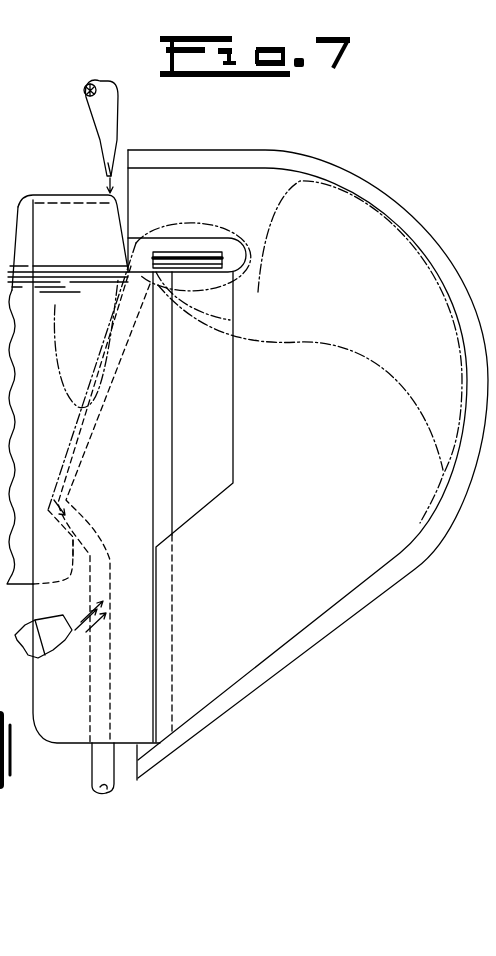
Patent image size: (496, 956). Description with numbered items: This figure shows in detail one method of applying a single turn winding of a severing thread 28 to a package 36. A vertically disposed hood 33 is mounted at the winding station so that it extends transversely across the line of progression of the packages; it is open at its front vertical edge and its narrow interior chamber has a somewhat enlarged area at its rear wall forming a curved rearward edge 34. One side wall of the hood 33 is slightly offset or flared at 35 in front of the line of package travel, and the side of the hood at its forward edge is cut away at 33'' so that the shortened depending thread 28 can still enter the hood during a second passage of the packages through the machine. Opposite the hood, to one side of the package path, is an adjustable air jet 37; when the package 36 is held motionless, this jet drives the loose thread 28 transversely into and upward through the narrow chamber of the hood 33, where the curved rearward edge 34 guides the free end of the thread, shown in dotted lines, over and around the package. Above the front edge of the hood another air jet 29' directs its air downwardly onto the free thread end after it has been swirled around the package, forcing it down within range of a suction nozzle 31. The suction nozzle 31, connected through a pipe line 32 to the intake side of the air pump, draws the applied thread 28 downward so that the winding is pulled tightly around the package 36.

The severing thread 28 is at (265, 287).
The air jet 29' is at (127, 136).
The suction nozzle 31 is at (90, 520).
The pipe line 32 is at (98, 776).
The hood 33 is at (297, 465).
The cut-away portion 33'' is at (215, 507).
The curved rearward edge 34 is at (423, 540).
The flared side wall portion 35 is at (72, 176).
The package 36 is at (203, 253).
The air jet 37 is at (50, 645).